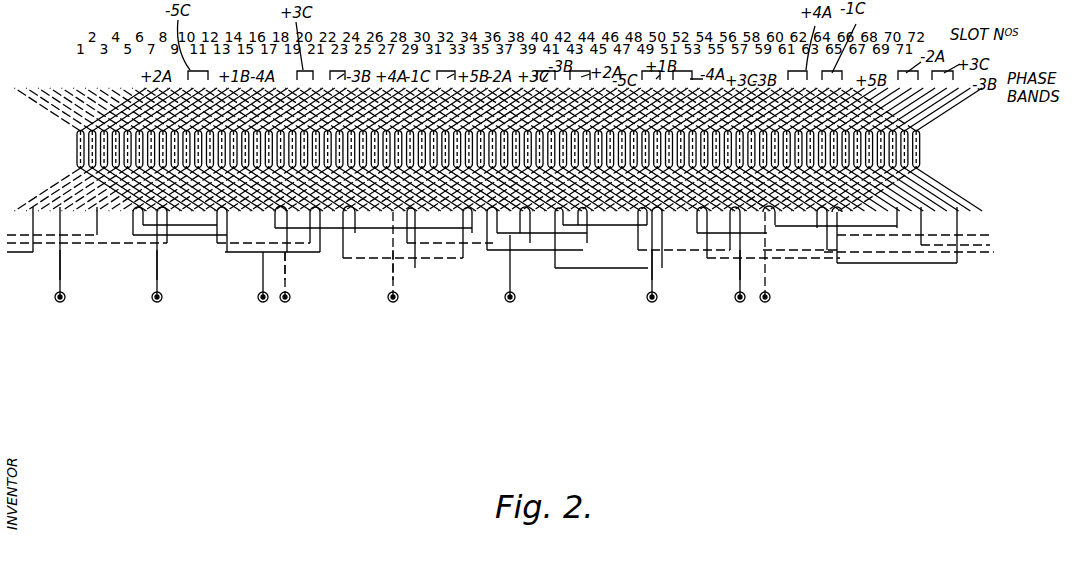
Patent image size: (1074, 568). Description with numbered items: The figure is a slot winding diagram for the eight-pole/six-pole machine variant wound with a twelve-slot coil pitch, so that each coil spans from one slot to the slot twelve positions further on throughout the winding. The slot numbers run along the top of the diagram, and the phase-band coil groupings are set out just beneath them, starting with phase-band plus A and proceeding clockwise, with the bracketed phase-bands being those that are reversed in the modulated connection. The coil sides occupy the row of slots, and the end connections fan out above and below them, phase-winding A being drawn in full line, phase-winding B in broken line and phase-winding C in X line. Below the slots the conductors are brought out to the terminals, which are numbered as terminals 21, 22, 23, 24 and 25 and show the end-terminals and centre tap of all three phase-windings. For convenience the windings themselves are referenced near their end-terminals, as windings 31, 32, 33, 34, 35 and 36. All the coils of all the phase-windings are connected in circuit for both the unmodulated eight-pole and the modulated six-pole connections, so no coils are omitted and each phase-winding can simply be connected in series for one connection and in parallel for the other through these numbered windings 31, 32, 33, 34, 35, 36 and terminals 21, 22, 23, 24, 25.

The terminal 21 is at (754, 318).
The terminal 22 is at (786, 318).
The terminal 23 is at (275, 318).
The terminal 24 is at (259, 300).
The terminal 25 is at (629, 318).
The phase-winding 31 is at (62, 279).
The phase-winding 32 is at (159, 279).
The phase-winding 33 is at (653, 279).
The phase-winding 34 is at (740, 285).
The phase-winding 35 is at (288, 279).
The phase-winding 36 is at (395, 279).